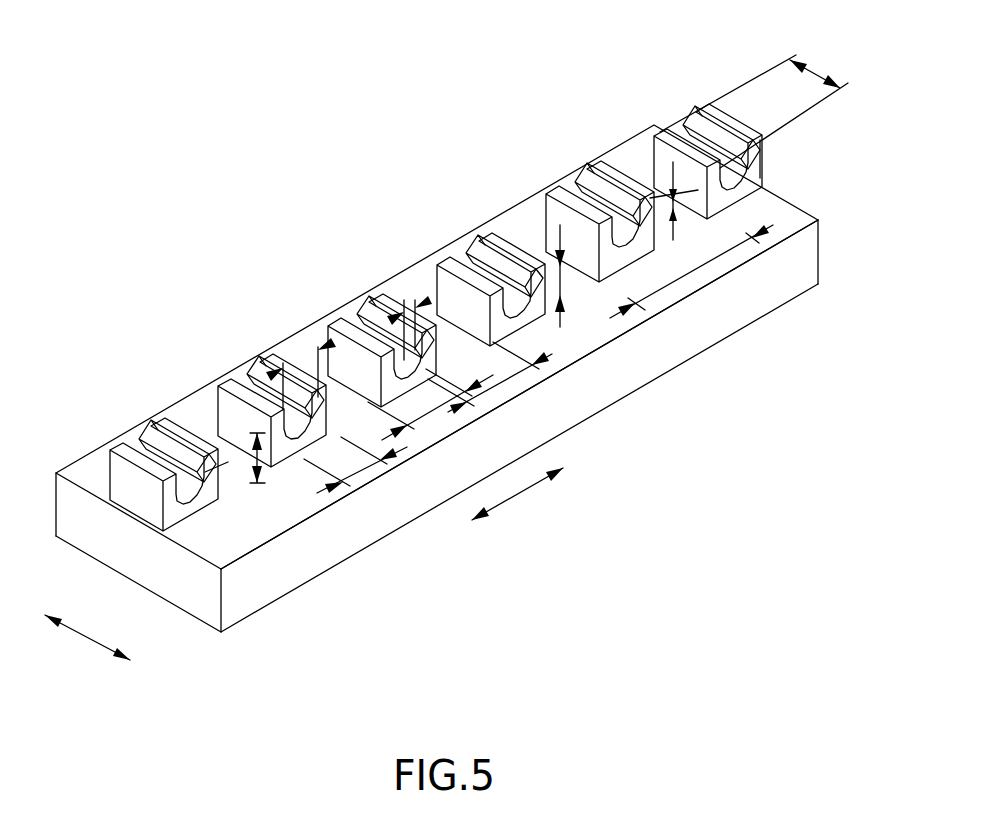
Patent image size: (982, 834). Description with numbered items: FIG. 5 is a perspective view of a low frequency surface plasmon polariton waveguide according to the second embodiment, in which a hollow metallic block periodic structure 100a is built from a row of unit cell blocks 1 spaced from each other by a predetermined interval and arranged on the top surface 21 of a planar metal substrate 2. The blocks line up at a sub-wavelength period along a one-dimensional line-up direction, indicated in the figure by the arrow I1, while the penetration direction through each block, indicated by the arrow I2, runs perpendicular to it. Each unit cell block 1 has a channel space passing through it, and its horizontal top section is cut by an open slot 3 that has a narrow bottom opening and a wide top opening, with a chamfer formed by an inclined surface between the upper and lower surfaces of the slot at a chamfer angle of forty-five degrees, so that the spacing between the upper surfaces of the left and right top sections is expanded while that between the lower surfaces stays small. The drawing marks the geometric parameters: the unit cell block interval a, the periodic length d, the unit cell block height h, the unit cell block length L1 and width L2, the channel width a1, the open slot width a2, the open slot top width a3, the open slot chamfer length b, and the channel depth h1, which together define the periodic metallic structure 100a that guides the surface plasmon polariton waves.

The hollow metallic block periodic structure 100a is at (418, 331).
The unit cell block 1 is at (150, 510).
The planar metal substrate 2 is at (760, 288).
The top surface 21 is at (207, 283).
The open slot 3 is at (136, 443).
The unit cell block length L1 is at (816, 74).
The unit cell block width L2 is at (428, 413).
The unit cell block interval a is at (507, 381).
The channel width a1 is at (362, 471).
The open slot width a2 is at (404, 300).
The open slot top width a3 is at (290, 362).
The open slot chamfer length b is at (672, 204).
The periodic length of unit cell block d is at (693, 270).
The unit cell block height h is at (250, 470).
The channel depth h1 is at (578, 292).
The first direction I1 is at (513, 497).
The second direction I2 is at (78, 642).